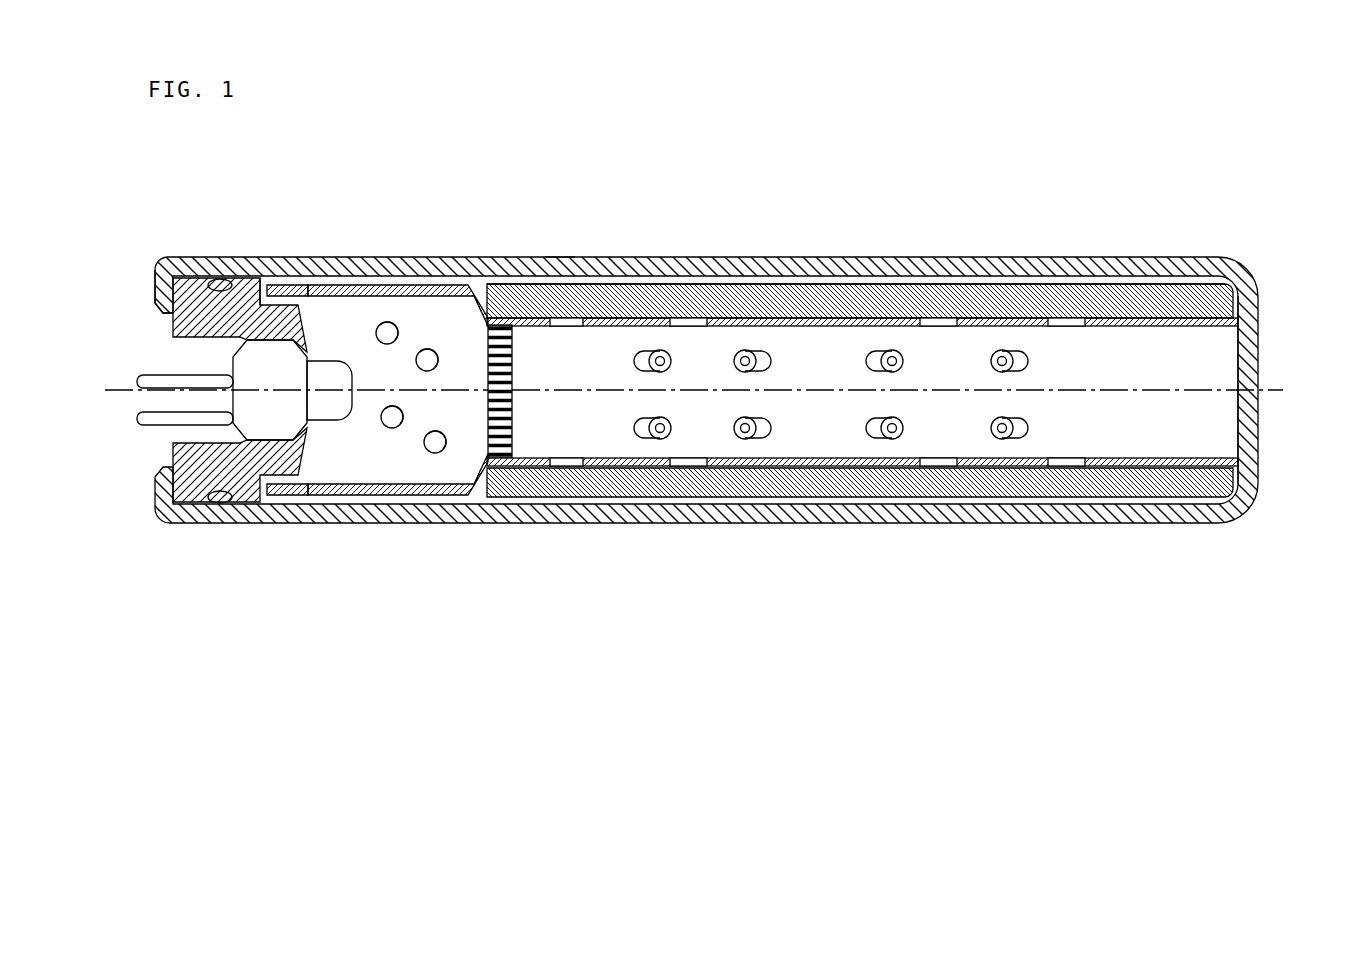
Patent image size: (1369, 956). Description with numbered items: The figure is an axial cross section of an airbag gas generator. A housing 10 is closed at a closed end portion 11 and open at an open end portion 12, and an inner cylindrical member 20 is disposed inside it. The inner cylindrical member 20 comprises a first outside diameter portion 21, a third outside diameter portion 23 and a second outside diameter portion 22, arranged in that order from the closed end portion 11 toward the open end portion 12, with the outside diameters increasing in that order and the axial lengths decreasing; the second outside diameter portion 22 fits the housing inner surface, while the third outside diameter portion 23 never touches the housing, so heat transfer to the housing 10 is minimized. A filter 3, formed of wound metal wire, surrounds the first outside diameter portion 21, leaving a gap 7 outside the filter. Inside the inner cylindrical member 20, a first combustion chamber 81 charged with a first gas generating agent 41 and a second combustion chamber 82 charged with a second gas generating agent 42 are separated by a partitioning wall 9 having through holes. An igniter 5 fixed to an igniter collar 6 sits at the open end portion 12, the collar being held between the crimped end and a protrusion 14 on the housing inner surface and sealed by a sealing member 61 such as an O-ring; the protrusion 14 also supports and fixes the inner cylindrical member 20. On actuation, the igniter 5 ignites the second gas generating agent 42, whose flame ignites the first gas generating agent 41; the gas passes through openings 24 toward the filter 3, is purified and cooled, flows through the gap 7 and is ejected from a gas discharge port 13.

The filter 3 is at (632, 293).
The igniter 5 is at (328, 400).
The igniter collar 6 is at (185, 520).
The gap 7 is at (878, 284).
The partitioning wall 9 is at (505, 430).
The housing 10 is at (388, 258).
The closed end portion 11 is at (1250, 342).
The open end portion 12 is at (152, 283).
The gas discharge port 13 is at (558, 258).
The protrusion 14 is at (265, 285).
The inner cylindrical member 20 is at (752, 423).
The first outside diameter portion 21 is at (617, 464).
The second outside diameter portion 22 is at (284, 500).
The third outside diameter portion 23 is at (503, 612).
The openings 24 is at (1063, 318).
The first gas generating agent 41 is at (755, 350).
The second gas generating agent 42 is at (377, 328).
The sealing member 61 is at (220, 503).
The first combustion chamber 81 is at (593, 377).
The second combustion chamber 82 is at (465, 342).